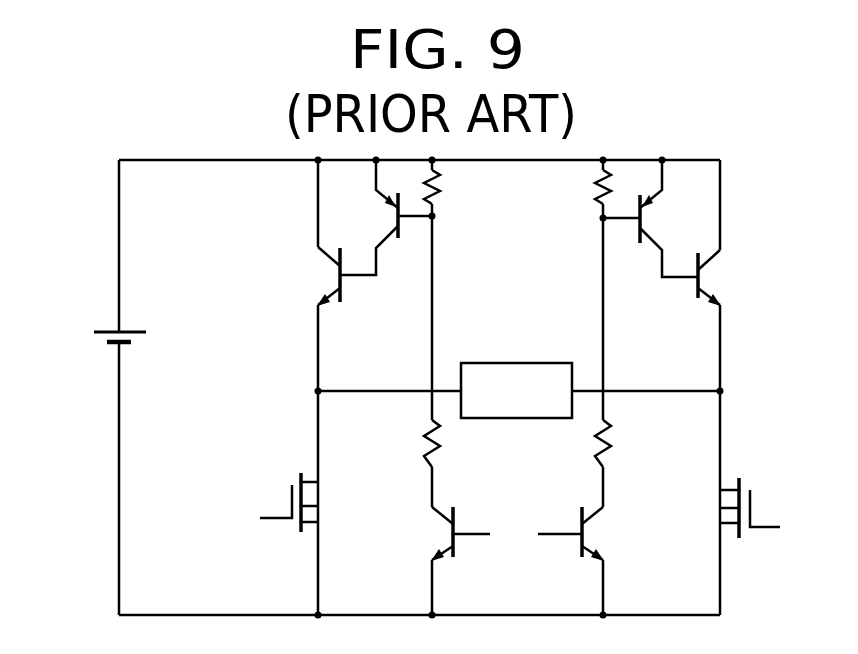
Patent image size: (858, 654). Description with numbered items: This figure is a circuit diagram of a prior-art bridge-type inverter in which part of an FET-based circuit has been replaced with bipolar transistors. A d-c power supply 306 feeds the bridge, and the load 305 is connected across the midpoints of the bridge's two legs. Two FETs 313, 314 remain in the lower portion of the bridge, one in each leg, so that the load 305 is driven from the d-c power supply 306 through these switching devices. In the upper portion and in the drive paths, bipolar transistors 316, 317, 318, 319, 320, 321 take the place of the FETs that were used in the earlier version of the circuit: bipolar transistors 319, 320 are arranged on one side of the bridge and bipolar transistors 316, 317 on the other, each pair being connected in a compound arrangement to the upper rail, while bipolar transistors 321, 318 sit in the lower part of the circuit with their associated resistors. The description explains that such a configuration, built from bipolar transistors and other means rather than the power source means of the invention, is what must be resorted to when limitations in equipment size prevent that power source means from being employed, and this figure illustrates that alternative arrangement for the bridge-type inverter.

The load 305 is at (518, 363).
The d-c power supply 306 is at (108, 329).
The FET 313 is at (293, 478).
The FET 314 is at (745, 478).
The bipolar transistor 316 is at (634, 241).
The bipolar transistor 317 is at (694, 288).
The bipolar transistor 318 is at (578, 525).
The bipolar transistor 319 is at (400, 240).
The bipolar transistor 320 is at (347, 282).
The bipolar transistor 321 is at (456, 525).